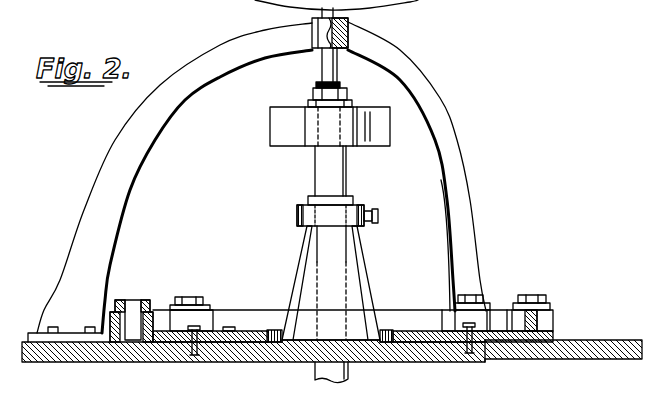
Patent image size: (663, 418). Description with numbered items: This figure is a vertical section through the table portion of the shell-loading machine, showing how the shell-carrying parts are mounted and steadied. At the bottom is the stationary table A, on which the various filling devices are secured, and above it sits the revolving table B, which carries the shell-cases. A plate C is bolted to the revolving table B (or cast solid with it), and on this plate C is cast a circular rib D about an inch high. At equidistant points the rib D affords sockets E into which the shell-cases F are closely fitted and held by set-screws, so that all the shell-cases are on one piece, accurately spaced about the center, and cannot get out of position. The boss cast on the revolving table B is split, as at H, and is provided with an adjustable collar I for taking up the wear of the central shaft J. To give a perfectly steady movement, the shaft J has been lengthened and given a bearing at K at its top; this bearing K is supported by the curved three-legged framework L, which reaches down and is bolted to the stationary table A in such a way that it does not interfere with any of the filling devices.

The stationary table A is at (145, 363).
The revolving table B is at (268, 345).
The plate C is at (452, 335).
The circular rib D is at (390, 311).
The sockets E is at (553, 310).
The shell-cases F is at (533, 298).
The split of boss H is at (357, 244).
The adjustable collar I is at (297, 218).
The central shaft J is at (330, 171).
The bearing K is at (350, 24).
The curved three-legged framework L is at (478, 190).